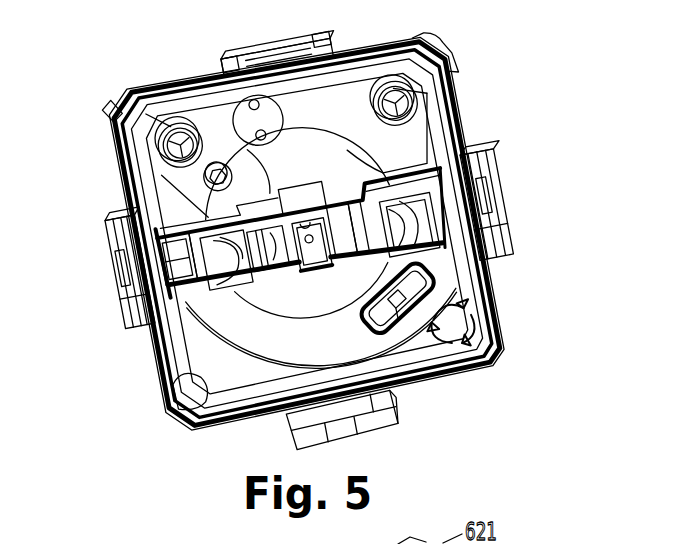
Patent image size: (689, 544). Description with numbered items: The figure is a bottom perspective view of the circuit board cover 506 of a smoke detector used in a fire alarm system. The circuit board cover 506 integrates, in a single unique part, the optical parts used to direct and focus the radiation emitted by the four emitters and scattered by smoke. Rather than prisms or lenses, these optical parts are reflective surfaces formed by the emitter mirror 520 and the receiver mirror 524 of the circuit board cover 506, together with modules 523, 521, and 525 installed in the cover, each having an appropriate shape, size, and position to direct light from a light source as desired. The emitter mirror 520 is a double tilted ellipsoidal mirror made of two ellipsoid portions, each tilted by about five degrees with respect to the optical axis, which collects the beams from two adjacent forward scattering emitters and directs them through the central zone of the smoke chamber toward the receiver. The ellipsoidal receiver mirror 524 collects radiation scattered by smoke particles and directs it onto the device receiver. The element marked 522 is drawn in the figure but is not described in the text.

The circuit board cover 506 is at (114, 120).
The emitter mirror 520 is at (455, 248).
The module 521 is at (269, 216).
The second guide 522 is at (347, 213).
The module 523 is at (140, 293).
The receiver mirror 524 is at (140, 262).
The module 525 is at (442, 195).